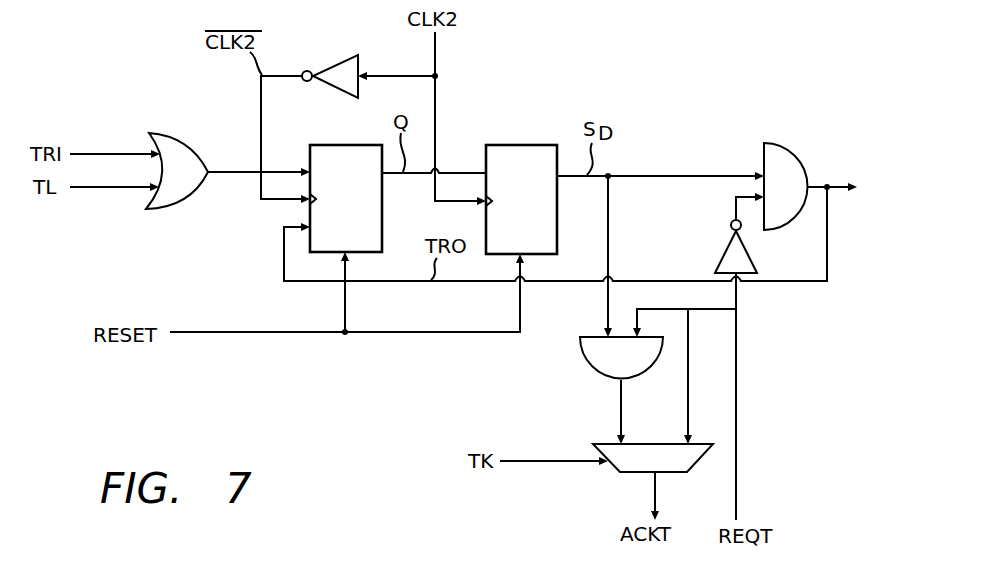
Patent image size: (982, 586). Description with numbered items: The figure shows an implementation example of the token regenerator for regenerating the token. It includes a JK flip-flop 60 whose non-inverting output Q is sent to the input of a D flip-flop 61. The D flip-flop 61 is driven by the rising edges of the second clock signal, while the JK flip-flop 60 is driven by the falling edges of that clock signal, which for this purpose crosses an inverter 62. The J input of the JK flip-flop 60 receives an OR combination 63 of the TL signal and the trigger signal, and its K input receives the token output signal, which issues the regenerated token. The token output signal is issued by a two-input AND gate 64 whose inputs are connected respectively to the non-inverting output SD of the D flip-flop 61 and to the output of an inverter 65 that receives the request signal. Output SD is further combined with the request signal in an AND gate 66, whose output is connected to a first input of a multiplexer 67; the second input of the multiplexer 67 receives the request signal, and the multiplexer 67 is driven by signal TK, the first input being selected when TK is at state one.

The JK flip-flop 60 is at (383, 240).
The D flip-flop 61 is at (521, 144).
The inverter 62 is at (314, 62).
The OR combination 63 is at (185, 134).
The two-input AND gate 64 is at (799, 152).
The inverter 65 is at (762, 253).
The AND gate 66 is at (582, 357).
The multiplexer 67 is at (700, 463).